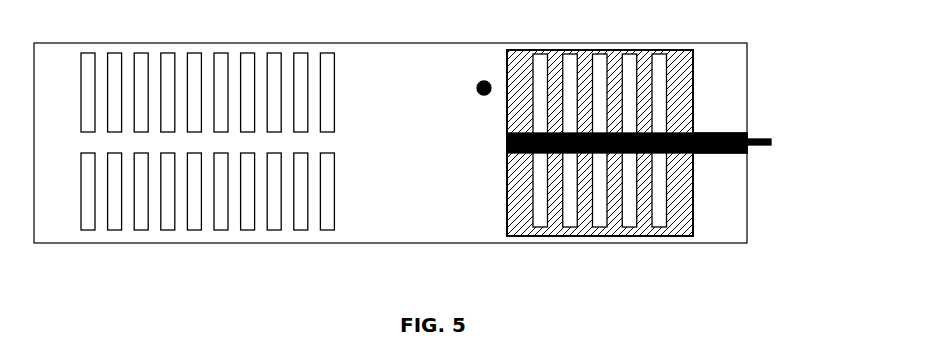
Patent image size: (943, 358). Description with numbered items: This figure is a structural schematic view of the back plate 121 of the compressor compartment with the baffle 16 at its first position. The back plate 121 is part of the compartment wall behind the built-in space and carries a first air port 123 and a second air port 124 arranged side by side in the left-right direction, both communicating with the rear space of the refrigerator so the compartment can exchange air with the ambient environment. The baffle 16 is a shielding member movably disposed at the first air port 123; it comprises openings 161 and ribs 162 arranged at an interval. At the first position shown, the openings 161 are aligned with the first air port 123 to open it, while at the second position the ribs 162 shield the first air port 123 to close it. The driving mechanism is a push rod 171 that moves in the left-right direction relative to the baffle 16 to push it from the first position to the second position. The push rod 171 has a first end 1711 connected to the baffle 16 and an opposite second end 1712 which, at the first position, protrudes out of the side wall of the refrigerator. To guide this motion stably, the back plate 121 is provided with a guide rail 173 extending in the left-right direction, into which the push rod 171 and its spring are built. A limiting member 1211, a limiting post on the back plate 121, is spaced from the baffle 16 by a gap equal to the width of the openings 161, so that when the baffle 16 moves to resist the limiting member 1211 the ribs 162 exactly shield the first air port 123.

The back plate 121 is at (730, 62).
The limiting member 1211 is at (483, 80).
The first air port 123 is at (569, 218).
The second air port 124 is at (168, 91).
The baffle 16 is at (582, 145).
The openings 161 is at (658, 83).
The ribs 162 is at (587, 83).
The push rod 171 is at (632, 133).
The first end 1711 is at (507, 134).
The second end 1712 is at (788, 127).
The guide rail 173 is at (712, 131).